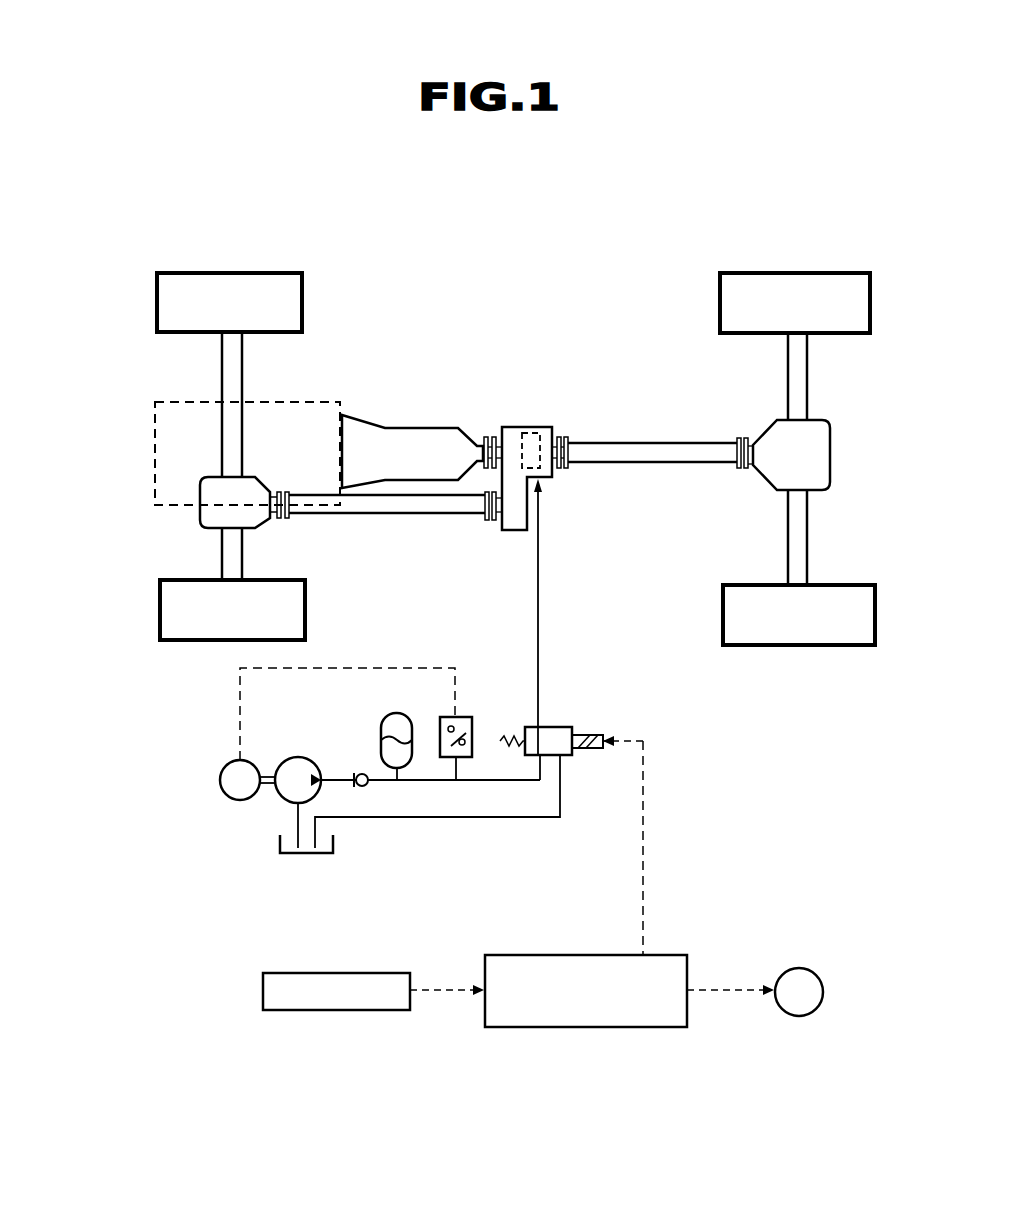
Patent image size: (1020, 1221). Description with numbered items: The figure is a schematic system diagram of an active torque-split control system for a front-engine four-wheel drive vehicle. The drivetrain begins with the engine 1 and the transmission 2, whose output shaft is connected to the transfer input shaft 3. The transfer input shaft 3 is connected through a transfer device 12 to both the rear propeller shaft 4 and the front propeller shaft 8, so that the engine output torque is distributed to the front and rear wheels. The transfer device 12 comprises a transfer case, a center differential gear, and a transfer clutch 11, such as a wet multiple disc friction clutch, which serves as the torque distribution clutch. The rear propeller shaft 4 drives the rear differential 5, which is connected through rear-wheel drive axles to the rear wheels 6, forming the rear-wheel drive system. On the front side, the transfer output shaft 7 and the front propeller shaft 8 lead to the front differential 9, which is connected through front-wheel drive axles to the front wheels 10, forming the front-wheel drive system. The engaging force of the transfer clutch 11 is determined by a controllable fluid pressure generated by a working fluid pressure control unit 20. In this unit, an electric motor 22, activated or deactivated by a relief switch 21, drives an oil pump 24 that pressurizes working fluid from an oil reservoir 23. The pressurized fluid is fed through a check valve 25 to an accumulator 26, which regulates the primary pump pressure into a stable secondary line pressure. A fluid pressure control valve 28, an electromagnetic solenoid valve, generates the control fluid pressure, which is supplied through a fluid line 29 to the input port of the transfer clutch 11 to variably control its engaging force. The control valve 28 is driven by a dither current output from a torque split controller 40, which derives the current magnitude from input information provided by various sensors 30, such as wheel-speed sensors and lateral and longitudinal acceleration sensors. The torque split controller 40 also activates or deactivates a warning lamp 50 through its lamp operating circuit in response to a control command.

The engine 1 is at (305, 402).
The transmission 2 is at (415, 428).
The transfer input shaft 3 is at (494, 436).
The rear propeller shaft 4 is at (657, 442).
The rear differential 5 is at (830, 425).
The rear wheels 6 is at (857, 335).
The transfer output shaft 7 is at (500, 527).
The front propeller shaft 8 is at (395, 514).
The front differential 9 is at (200, 520).
The front wheels 10 is at (178, 335).
The transfer clutch 11 is at (522, 450).
The transfer device 12 is at (550, 428).
The working fluid pressure control unit 20 is at (680, 704).
The relief switch 21 is at (465, 716).
The electric motor 22 is at (228, 762).
The oil reservoir 23 is at (333, 840).
The oil pump 24 is at (293, 757).
The check valve 25 is at (357, 773).
The accumulator 26 is at (406, 722).
The fluid pressure control valve 28 is at (530, 727).
The fluid line 29 is at (538, 565).
The sensors 30 is at (350, 973).
The torque split controller 40 is at (543, 955).
The warning lamp 50 is at (790, 968).